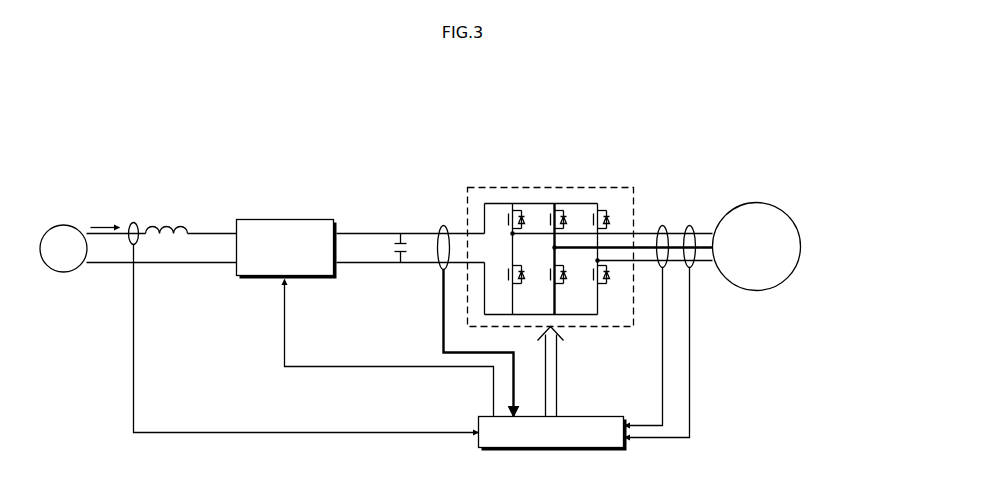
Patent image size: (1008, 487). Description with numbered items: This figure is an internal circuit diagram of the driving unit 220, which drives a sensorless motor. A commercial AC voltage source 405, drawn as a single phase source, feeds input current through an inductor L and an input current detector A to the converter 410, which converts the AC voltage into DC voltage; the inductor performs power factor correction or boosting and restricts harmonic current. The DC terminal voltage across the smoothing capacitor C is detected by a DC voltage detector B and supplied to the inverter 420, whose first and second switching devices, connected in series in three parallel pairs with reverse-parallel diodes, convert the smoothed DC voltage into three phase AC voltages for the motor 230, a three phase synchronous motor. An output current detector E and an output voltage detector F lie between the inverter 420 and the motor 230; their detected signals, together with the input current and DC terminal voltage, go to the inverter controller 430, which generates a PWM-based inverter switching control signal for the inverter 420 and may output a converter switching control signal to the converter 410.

The driving unit 220 is at (119, 121).
The commercial AC voltage source 405 is at (73, 224).
The converter 410 is at (316, 218).
The inverter 420 is at (622, 186).
The inverter controller 430 is at (610, 415).
The motor 230 is at (787, 212).